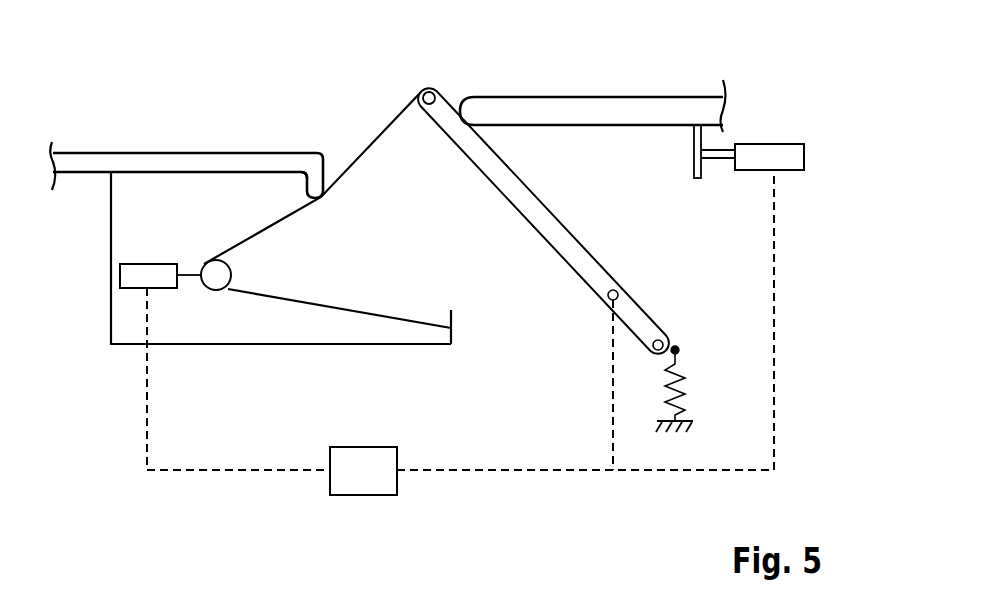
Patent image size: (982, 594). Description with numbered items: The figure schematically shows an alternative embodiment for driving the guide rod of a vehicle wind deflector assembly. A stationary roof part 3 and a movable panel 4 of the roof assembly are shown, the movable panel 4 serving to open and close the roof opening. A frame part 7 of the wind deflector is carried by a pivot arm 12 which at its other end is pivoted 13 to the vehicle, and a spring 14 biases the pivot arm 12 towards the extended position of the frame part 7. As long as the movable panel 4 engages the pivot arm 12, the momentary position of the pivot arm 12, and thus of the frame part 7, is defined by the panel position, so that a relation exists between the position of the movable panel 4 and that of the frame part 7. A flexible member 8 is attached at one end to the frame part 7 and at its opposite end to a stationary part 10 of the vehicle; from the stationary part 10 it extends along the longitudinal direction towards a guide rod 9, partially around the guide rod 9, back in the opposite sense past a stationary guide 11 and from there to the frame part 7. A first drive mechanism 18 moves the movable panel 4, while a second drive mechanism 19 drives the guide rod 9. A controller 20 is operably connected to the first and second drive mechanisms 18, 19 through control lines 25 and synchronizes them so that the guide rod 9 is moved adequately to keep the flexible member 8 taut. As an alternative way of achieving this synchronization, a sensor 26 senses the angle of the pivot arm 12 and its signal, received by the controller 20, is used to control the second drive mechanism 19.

The stationary roof part 3 is at (158, 156).
The movable panel 4 is at (588, 108).
The frame part 7 is at (430, 90).
The flexible member 8 is at (345, 178).
The guide rod 9 is at (222, 276).
The stationary part 10 is at (332, 346).
The stationary guide 11 is at (308, 183).
The pivot arm 12 is at (536, 198).
The pivot 13 is at (668, 341).
The spring 14 is at (680, 381).
The first drive mechanism 18 is at (765, 150).
The second drive mechanism 19 is at (130, 274).
The controller 20 is at (369, 447).
The control lines 25 is at (180, 472).
The sensor 26 is at (620, 295).